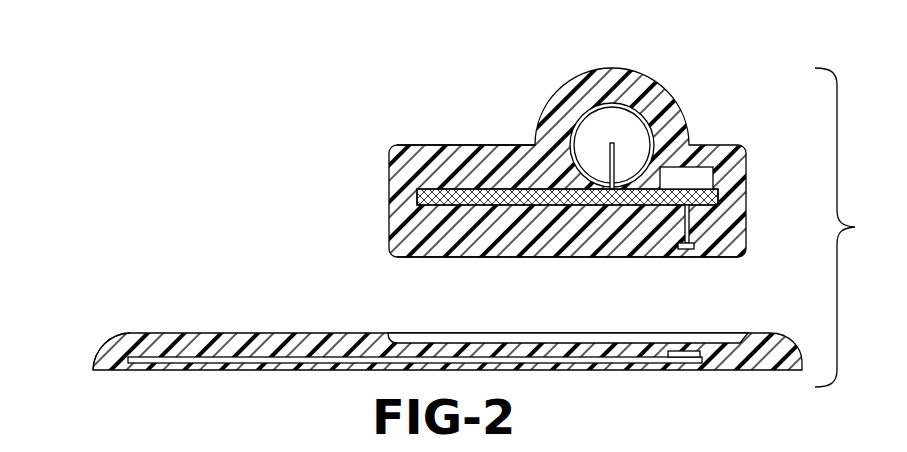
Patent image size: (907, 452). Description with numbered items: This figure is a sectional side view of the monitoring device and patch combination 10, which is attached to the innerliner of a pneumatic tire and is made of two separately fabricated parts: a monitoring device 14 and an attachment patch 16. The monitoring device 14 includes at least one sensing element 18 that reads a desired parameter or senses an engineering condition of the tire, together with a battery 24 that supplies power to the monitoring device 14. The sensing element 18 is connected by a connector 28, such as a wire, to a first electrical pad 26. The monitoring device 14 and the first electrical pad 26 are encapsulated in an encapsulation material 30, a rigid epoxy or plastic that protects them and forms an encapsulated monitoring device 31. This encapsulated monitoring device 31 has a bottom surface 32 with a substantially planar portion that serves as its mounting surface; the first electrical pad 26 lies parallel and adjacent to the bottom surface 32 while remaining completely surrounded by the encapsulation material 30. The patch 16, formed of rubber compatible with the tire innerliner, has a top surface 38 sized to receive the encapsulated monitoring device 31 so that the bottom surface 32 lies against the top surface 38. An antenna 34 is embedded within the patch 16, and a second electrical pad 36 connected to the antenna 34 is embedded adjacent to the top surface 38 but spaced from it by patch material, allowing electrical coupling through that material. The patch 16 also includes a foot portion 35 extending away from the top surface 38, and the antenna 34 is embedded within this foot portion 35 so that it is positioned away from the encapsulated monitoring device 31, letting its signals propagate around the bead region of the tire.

The monitoring device and patch combination 10 is at (852, 227).
The monitoring device 14 is at (503, 182).
The attachment patch 16 is at (160, 390).
The sensing element 18 is at (693, 178).
The battery 24 is at (608, 122).
The first electrical pad 26 is at (690, 240).
The connector 28 is at (696, 238).
The encapsulation material 30 is at (398, 165).
The encapsulated monitoring device 31 is at (440, 136).
The bottom surface 32 is at (543, 258).
The antenna 34 is at (307, 366).
The foot portion 35 is at (107, 345).
The second electrical pad 36 is at (696, 350).
The top surface 38 is at (432, 342).